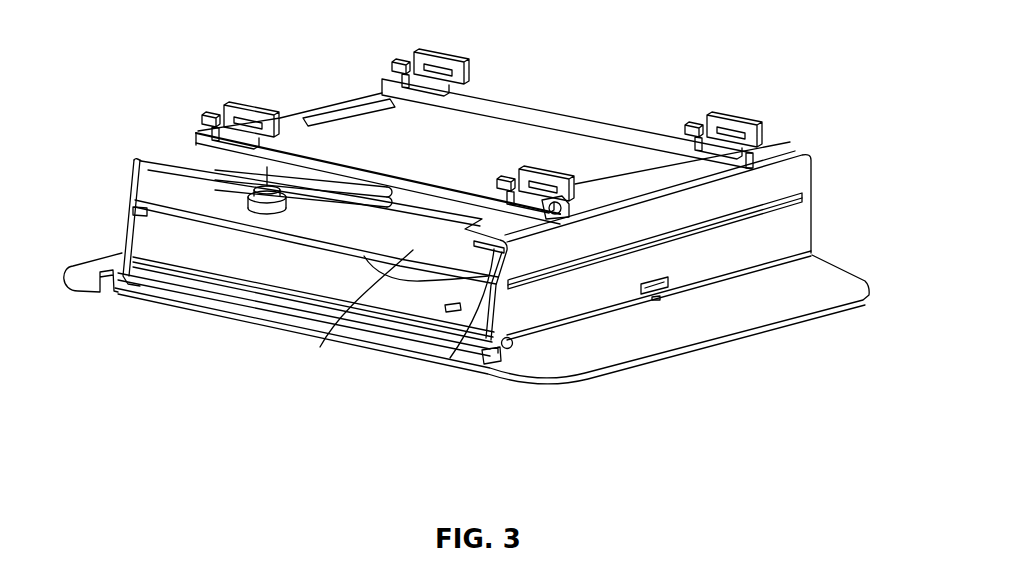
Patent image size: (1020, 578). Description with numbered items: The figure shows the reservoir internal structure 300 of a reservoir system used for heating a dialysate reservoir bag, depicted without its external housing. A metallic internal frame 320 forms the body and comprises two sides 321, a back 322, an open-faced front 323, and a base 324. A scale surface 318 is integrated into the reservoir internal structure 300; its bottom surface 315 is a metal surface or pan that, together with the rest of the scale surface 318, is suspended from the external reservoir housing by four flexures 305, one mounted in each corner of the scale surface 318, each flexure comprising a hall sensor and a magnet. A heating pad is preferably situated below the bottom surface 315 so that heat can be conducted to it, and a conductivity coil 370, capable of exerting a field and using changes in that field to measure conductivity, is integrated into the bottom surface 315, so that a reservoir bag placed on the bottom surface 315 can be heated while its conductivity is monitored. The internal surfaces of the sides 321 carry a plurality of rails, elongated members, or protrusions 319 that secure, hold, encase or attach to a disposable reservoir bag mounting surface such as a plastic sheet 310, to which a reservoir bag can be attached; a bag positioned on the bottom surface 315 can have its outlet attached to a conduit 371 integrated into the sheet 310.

The reservoir internal structure 300 is at (815, 190).
The flexures 305 is at (237, 114).
The disposable reservoir bag mounting surface 310 is at (256, 250).
The bottom surface 315 is at (430, 307).
The scale surface 318 is at (347, 113).
The rails, elongated members, or protrusions 319 is at (131, 208).
The metallic internal frame 320 is at (795, 235).
The sides 321 is at (119, 243).
The back 322 is at (767, 133).
The open-faced front 323 is at (391, 323).
The base 324 is at (722, 325).
The conductivity coil 370 is at (372, 262).
The conduit 371 is at (195, 136).